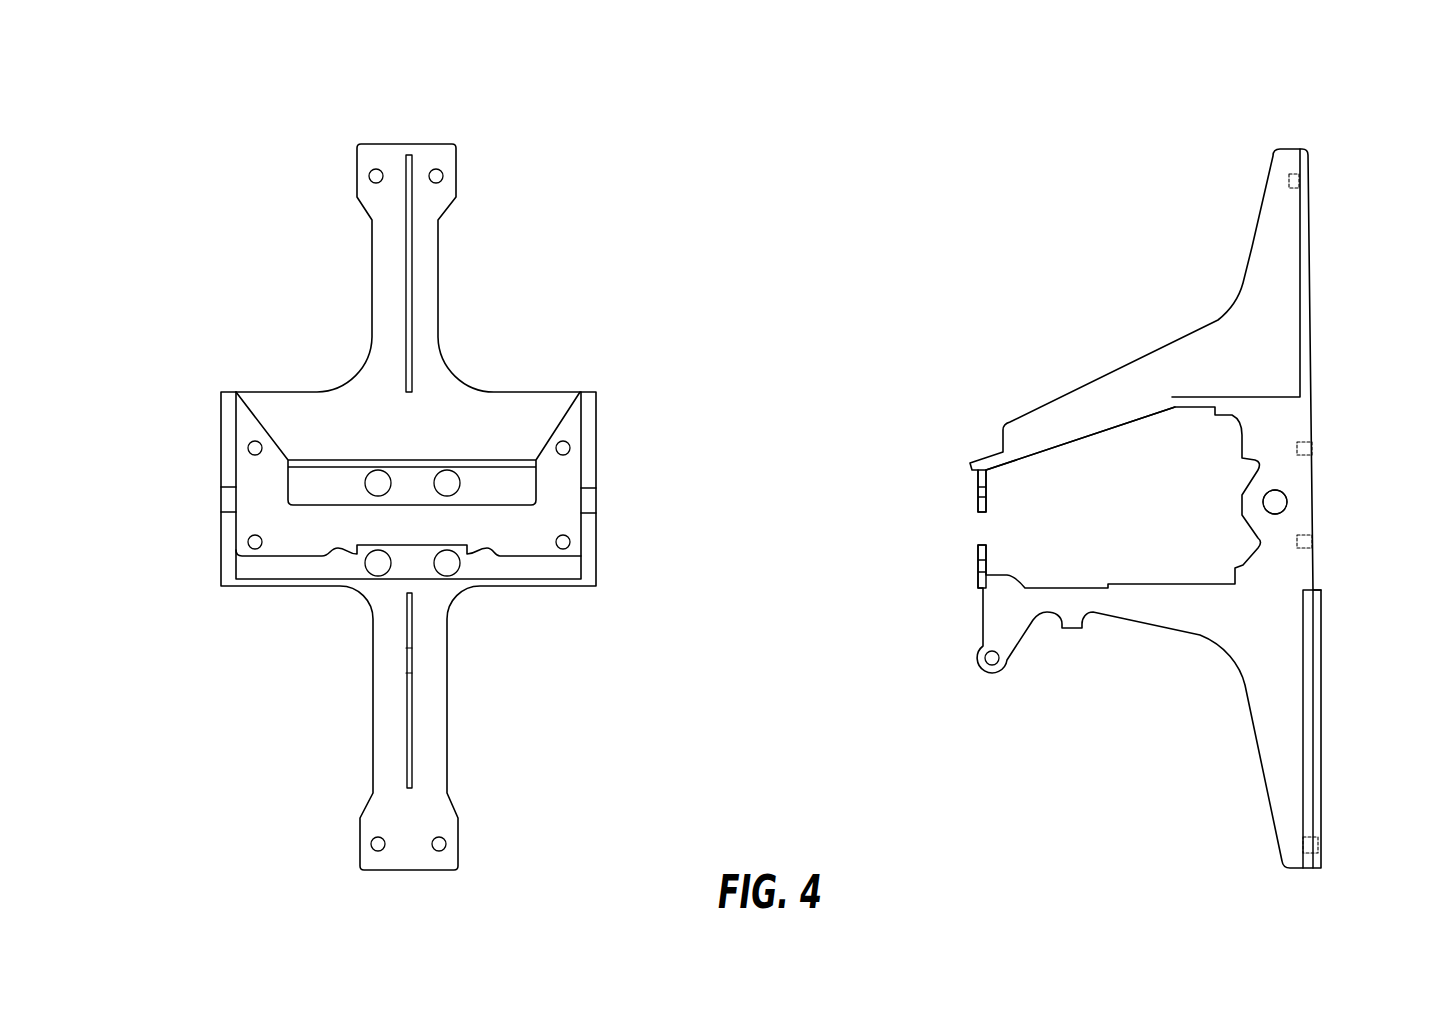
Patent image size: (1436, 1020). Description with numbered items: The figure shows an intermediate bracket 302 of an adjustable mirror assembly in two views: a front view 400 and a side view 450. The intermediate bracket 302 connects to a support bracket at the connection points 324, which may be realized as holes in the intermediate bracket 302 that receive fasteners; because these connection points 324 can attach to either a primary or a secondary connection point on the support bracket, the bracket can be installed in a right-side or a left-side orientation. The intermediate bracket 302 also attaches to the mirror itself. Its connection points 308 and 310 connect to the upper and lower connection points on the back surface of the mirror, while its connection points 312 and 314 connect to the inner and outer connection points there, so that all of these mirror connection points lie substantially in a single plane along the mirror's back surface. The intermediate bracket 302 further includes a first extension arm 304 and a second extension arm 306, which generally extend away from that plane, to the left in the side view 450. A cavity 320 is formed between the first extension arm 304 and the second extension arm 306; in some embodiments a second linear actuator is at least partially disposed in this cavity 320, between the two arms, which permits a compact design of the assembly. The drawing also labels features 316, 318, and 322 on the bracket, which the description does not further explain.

The front view 400 is at (262, 82).
The side view 450 is at (1063, 148).
The intermediate bracket 302 is at (432, 272).
The first extension arm 304 is at (519, 470).
The second extension arm 306 is at (357, 560).
The connection point 308 is at (372, 171).
The connection point 310 is at (372, 846).
The connection point 312 is at (592, 500).
The connection point 314 is at (227, 500).
The upper fastener holes 316 is at (379, 477).
The lower fastener holes 318 is at (380, 572).
The cavity 320 is at (307, 537).
The hinge hole 322 is at (408, 658).
The connection points 324 is at (250, 445).